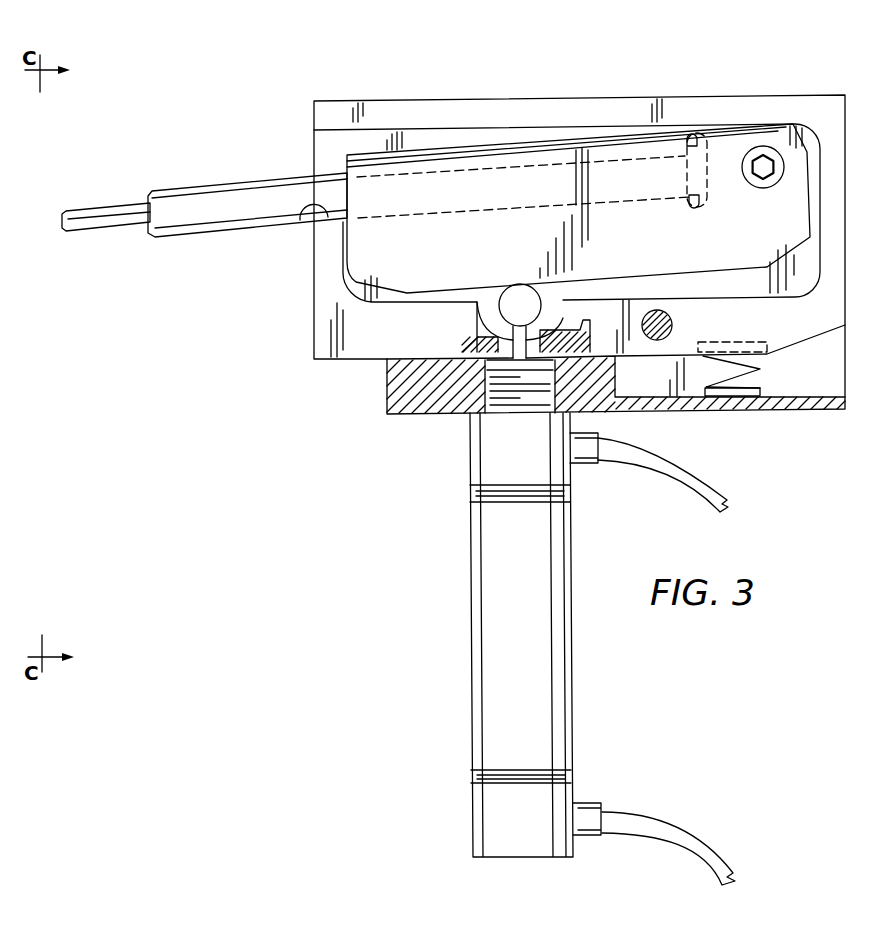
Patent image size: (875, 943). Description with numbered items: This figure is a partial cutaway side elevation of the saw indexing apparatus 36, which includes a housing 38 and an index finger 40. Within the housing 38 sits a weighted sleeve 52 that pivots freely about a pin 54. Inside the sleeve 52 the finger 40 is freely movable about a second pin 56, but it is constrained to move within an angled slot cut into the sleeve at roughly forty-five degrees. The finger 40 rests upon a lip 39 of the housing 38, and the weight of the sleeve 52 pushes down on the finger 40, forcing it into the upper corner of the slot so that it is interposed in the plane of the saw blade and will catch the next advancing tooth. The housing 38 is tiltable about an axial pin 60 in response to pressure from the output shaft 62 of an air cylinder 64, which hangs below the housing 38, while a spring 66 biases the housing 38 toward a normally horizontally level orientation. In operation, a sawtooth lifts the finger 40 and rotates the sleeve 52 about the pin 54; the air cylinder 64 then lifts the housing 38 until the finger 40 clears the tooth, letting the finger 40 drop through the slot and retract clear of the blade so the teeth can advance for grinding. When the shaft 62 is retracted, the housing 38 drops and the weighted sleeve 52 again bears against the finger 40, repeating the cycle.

The indexing apparatus 36 is at (404, 505).
The housing 38 is at (468, 98).
The lip 39 is at (303, 217).
The index finger 40 is at (123, 227).
The weighted sleeve 52 is at (749, 236).
The pin 54 is at (773, 146).
The pin 56 is at (708, 157).
The axial pin 60 is at (673, 331).
The output shaft 62 is at (490, 305).
The air cylinder 64 is at (573, 677).
The spring 66 is at (765, 383).